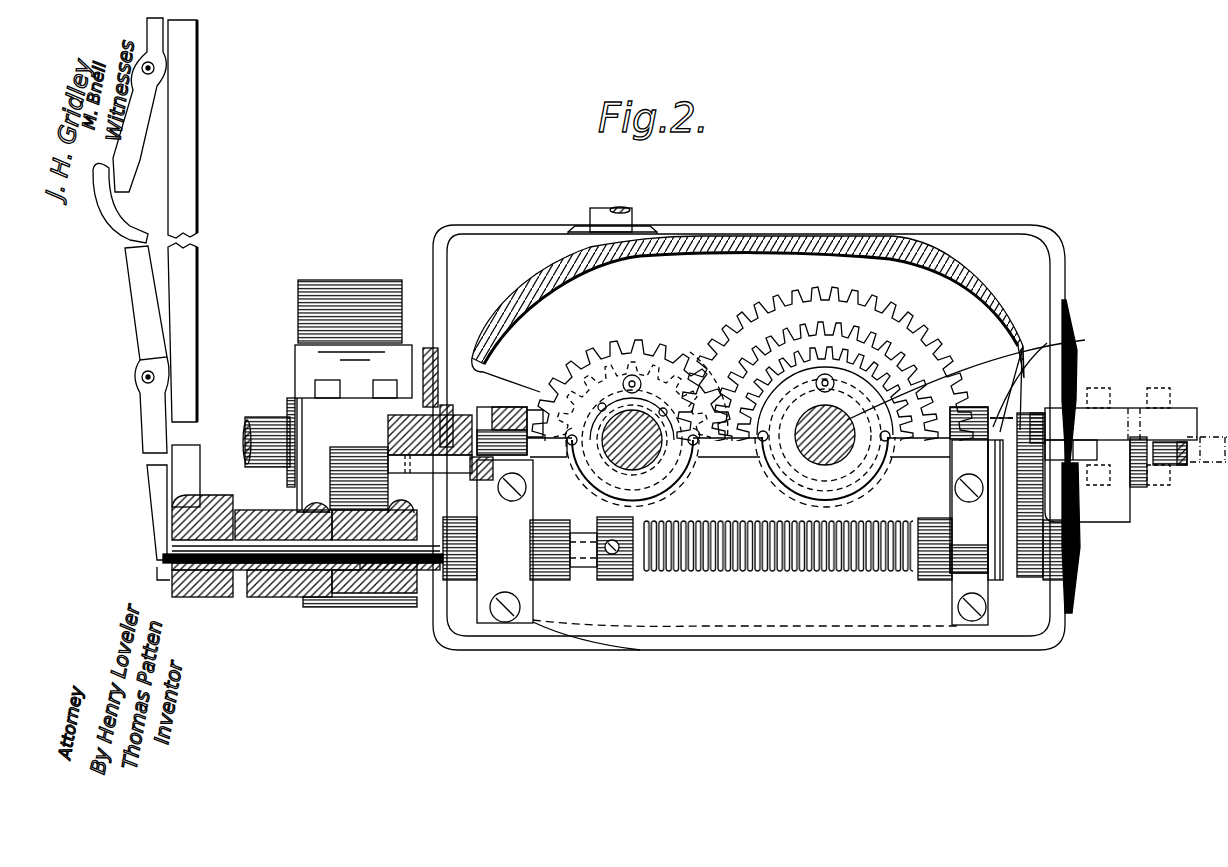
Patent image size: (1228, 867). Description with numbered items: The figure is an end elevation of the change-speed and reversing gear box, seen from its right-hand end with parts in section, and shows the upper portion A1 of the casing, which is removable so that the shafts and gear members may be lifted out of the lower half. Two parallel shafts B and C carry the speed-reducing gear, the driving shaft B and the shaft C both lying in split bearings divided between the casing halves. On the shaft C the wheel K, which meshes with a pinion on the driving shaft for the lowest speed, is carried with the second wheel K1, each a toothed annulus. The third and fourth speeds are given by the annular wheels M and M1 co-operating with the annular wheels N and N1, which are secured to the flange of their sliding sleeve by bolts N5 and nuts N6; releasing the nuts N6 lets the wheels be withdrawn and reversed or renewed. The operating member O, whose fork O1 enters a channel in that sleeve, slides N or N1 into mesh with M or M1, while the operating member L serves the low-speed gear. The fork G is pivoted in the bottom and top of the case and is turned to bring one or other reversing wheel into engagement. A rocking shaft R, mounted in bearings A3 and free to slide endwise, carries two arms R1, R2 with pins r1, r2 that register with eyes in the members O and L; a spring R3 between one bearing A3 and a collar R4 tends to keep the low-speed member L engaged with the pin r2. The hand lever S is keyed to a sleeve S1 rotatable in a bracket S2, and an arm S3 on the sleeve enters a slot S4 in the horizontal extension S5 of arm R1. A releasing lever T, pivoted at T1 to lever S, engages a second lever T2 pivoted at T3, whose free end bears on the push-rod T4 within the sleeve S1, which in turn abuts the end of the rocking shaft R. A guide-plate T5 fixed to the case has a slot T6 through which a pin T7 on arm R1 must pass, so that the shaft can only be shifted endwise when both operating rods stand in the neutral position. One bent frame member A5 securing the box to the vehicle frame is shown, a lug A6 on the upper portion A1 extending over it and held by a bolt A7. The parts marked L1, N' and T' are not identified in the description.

The upper portion of the gear box A1 is at (797, 234).
The bearings A3 is at (510, 580).
The frame member A5 is at (1207, 453).
The lug A6 is at (1180, 415).
The bolt A7 is at (1157, 477).
The shaft B is at (630, 384).
The shaft C is at (905, 393).
The operating member or fork G is at (615, 221).
The wheel K is at (855, 305).
The second wheel K1 is at (810, 330).
The operating member L is at (953, 453).
The bearing L1 is at (925, 400).
The annular wheel M is at (978, 374).
The annular wheel M1 is at (1120, 345).
The annular wheel N is at (632, 425).
The annular wheel N1 is at (597, 357).
The gear wheel N' is at (709, 363).
The bolts N5 is at (573, 445).
The nuts N6 is at (693, 445).
The operating member O is at (537, 420).
The fork O1 is at (663, 406).
The rocking shaft R is at (573, 570).
The arm R1 is at (403, 562).
The arm R2 is at (1073, 568).
The spring R3 is at (683, 573).
The collar R4 is at (623, 562).
The pin r1 is at (502, 423).
The pin r2 is at (1053, 462).
The hand lever S is at (190, 111).
The sleeve S1 is at (255, 563).
The bracket S2 is at (282, 590).
The arm S3 is at (368, 563).
The slot S4 is at (330, 472).
The horizontal extension S5 is at (388, 432).
The releasing lever T is at (169, 105).
The pivot T1 is at (156, 68).
The lever arm T' is at (177, 251).
The second lever T2 is at (130, 230).
The pivot T3 is at (142, 377).
The plunger or push-rod T4 is at (170, 537).
The guide-plate T5 is at (435, 348).
The slot T6 is at (440, 402).
The pin or stud T7 is at (413, 398).